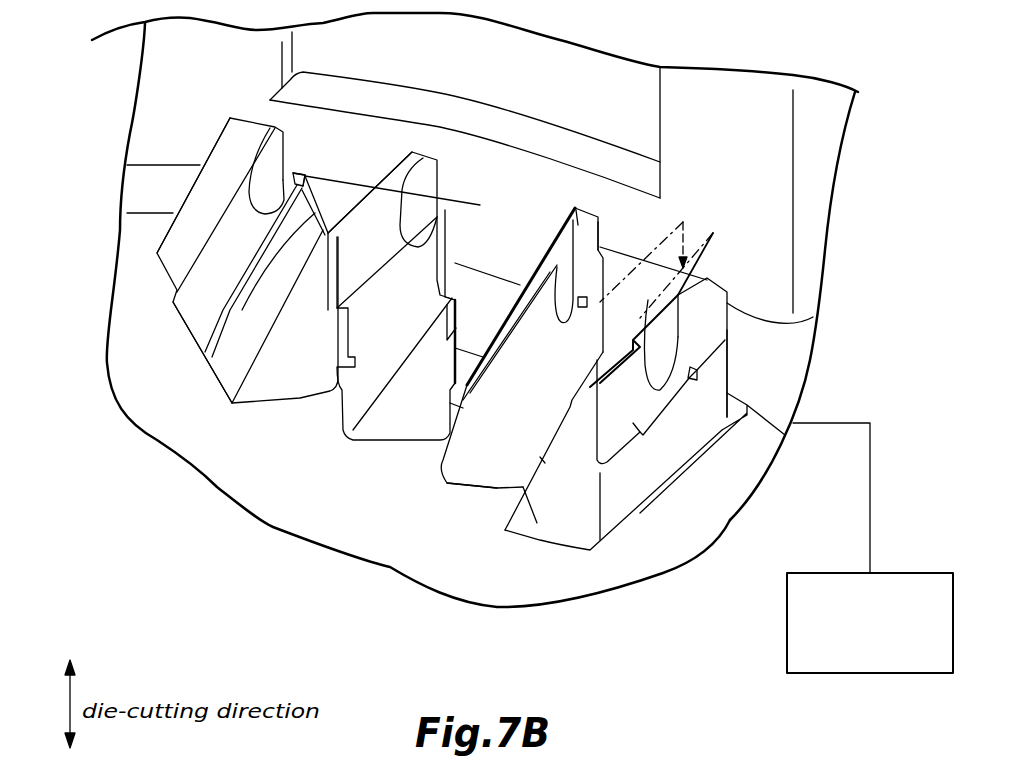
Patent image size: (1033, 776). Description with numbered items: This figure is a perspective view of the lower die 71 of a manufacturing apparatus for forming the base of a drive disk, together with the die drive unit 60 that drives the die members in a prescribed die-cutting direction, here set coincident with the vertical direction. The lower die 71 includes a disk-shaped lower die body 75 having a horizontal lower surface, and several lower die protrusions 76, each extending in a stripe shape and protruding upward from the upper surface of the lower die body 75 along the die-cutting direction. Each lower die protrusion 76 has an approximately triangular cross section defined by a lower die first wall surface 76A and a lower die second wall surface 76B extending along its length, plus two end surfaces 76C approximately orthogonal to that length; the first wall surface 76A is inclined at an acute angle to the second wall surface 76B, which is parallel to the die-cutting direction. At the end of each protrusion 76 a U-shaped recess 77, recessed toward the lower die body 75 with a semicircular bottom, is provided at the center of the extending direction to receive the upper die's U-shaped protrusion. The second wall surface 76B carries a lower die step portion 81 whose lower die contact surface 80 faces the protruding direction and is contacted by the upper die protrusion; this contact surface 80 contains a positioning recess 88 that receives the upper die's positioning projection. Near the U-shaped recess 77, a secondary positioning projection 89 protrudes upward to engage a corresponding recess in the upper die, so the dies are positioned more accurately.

The die drive unit 60 is at (915, 573).
The lower die 71 is at (768, 504).
The lower die body 75 is at (707, 520).
The lower die protrusion 76 is at (370, 432).
The lower die first wall surface 76A is at (240, 227).
The lower die second wall surface 76B is at (352, 240).
The end surface of the lower die protrusion 76C is at (224, 388).
The U-shaped recess 77 is at (277, 150).
The lower die contact surface 80 is at (705, 360).
The lower die step portion 81 is at (732, 333).
The positioning recess 88 is at (665, 413).
The secondary positioning projection 89 is at (303, 165).